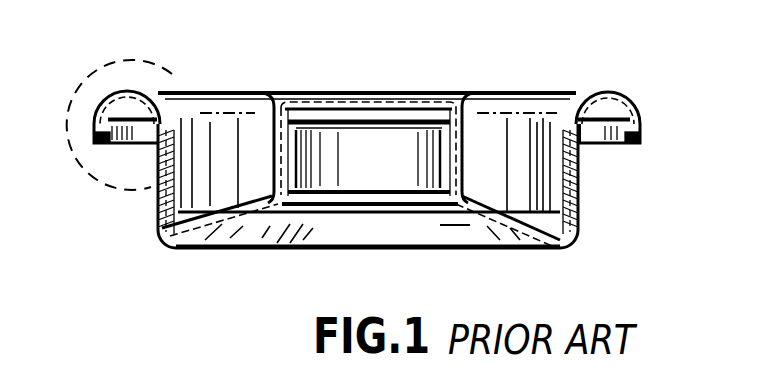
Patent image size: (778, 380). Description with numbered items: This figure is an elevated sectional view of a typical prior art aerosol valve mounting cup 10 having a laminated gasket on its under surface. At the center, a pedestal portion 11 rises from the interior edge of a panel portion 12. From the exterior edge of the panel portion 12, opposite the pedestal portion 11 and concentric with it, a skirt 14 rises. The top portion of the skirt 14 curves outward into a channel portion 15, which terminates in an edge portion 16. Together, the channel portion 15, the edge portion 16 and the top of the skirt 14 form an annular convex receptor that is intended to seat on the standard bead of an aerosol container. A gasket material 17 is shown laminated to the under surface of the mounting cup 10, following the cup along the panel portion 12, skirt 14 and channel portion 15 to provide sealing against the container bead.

The mounting cup 10 is at (382, 157).
The pedestal portion 11 is at (327, 93).
The panel portion 12 is at (222, 218).
The skirt 14 is at (180, 170).
The channel portion 15 is at (136, 92).
The edge portion 16 is at (97, 129).
The gasket material 17 is at (122, 150).